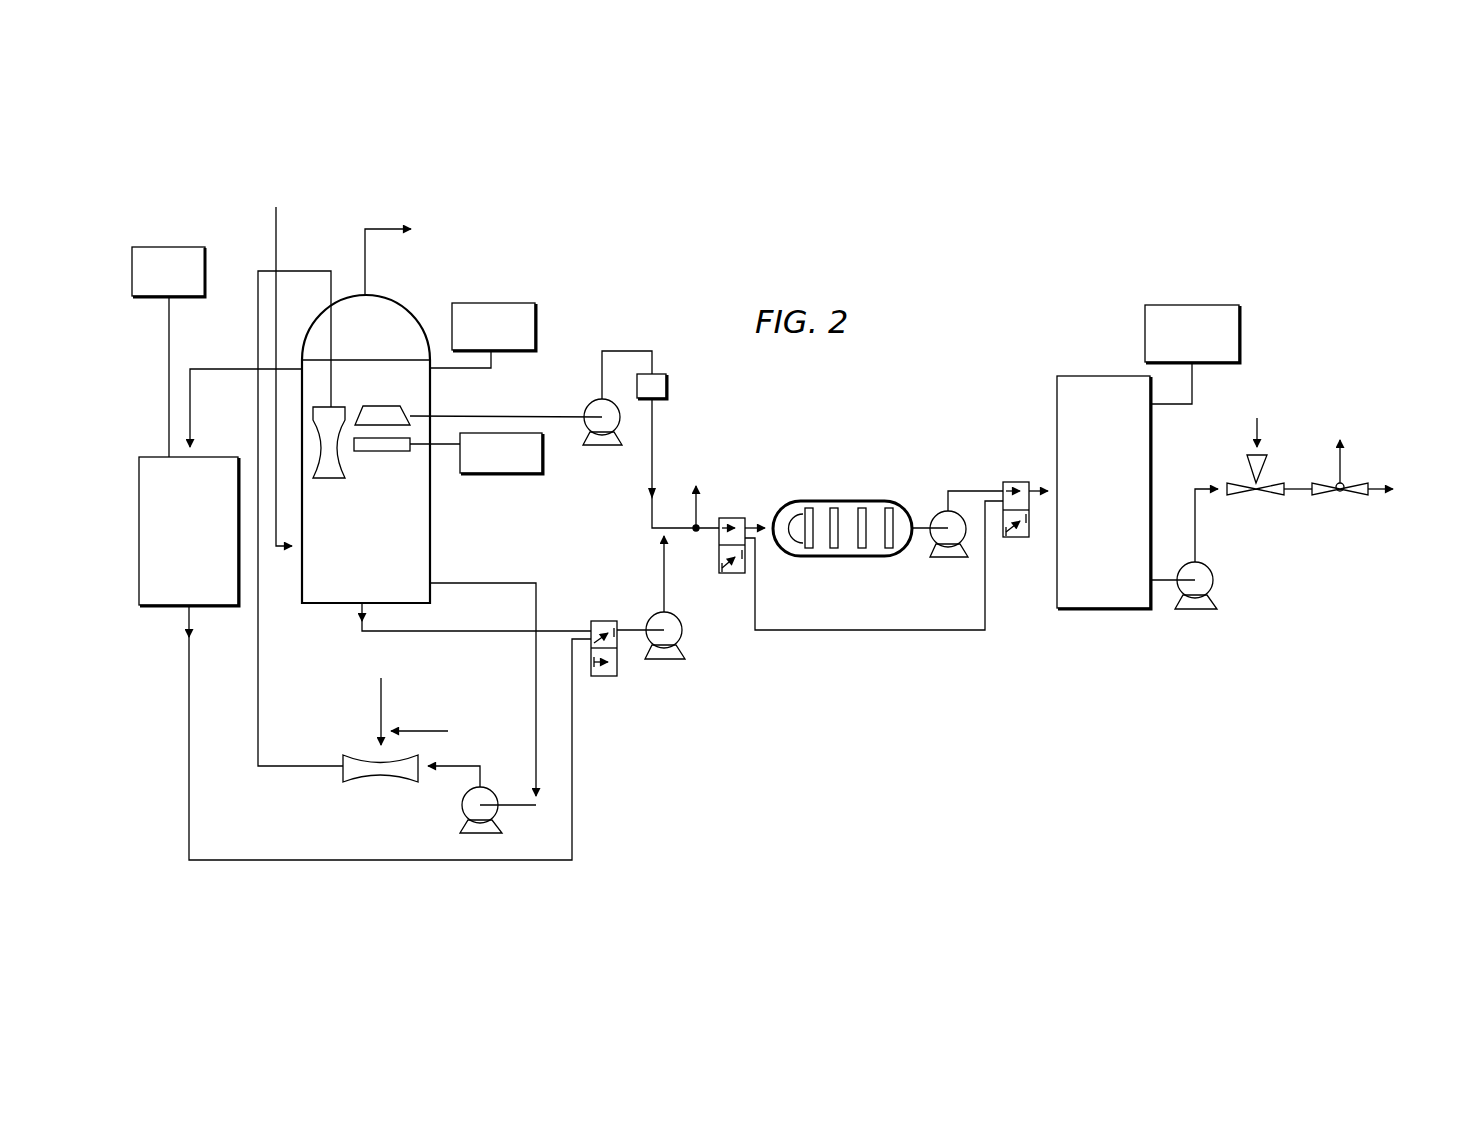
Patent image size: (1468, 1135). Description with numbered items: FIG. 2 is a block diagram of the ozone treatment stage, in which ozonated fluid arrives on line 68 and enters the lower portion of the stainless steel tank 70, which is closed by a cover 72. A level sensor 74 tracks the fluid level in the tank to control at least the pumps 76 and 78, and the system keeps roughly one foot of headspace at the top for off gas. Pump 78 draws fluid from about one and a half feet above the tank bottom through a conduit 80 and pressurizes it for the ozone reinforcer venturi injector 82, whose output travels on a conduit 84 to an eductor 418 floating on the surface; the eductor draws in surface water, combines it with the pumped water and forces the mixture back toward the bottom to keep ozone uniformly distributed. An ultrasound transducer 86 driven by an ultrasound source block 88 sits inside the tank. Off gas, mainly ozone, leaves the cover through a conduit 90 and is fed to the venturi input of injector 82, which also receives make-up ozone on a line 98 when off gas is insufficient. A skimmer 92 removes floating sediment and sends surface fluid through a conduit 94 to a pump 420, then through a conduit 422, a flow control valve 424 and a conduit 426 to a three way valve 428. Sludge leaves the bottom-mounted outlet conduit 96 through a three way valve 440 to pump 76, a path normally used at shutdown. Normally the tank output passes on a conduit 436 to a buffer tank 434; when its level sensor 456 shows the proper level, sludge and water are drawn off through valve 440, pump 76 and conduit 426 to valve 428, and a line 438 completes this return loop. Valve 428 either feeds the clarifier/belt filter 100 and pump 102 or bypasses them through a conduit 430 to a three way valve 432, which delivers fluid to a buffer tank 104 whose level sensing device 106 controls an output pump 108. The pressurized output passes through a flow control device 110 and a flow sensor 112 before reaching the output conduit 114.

The line 68 is at (276, 238).
The tank 70 is at (430, 522).
The cover 72 is at (392, 307).
The level sensor 74 is at (536, 322).
The pump 76 is at (648, 618).
The pump 78 is at (498, 816).
The conduit 80 is at (494, 583).
The ozone reinforcer venturi injector 82 is at (364, 755).
The conduit 84 is at (288, 767).
The ultrasound transducer 86 is at (392, 452).
The ultrasound source block 88 is at (518, 474).
The conduit 90 is at (392, 228).
The skimmer 92 is at (372, 405).
The conduit 94 is at (435, 416).
The bottom-mounted outlet conduit 96 is at (460, 632).
The line 98 is at (423, 731).
The clarifier/belt filter 100 is at (825, 500).
The pump 102 is at (936, 516).
The buffer tank 104 is at (1086, 539).
The level sensing device 106 is at (1212, 305).
The output pump 108 is at (1216, 588).
The flow control device 110 is at (1240, 483).
The flow sensor 112 is at (1325, 483).
The conduit 114 is at (1378, 485).
The eductor 418 is at (332, 479).
The pump 420 is at (589, 403).
The conduit 422 is at (637, 351).
The flow control valve 424 is at (668, 386).
The conduit 426 is at (684, 529).
The three way valve 428 is at (736, 517).
The conduit 430 is at (781, 634).
The three way valve 432 is at (1012, 482).
The buffer tank 434 is at (171, 584).
The conduit 436 is at (229, 369).
The line 438 is at (573, 770).
The three way valve 440 is at (605, 678).
The level sensor 456 is at (157, 247).